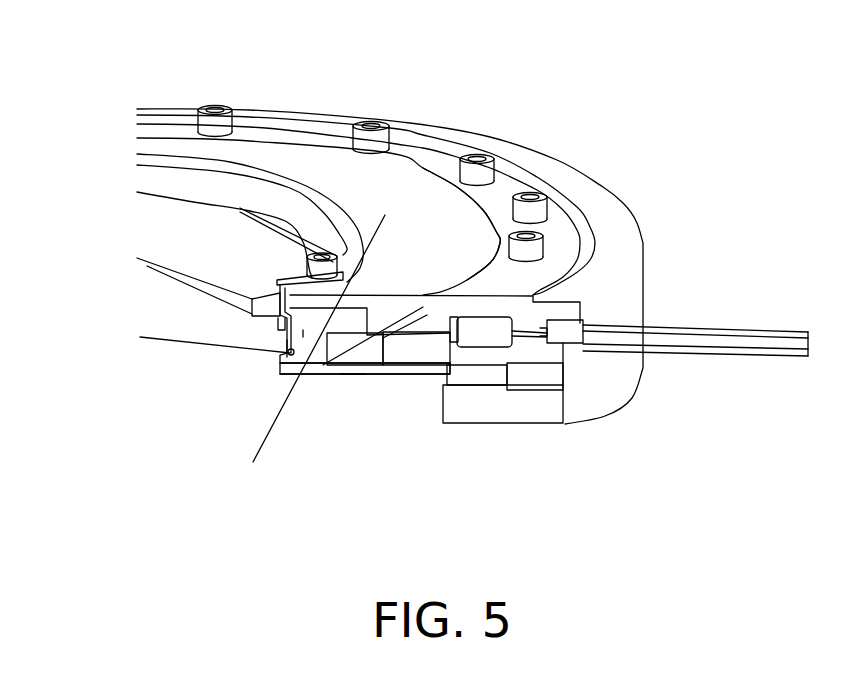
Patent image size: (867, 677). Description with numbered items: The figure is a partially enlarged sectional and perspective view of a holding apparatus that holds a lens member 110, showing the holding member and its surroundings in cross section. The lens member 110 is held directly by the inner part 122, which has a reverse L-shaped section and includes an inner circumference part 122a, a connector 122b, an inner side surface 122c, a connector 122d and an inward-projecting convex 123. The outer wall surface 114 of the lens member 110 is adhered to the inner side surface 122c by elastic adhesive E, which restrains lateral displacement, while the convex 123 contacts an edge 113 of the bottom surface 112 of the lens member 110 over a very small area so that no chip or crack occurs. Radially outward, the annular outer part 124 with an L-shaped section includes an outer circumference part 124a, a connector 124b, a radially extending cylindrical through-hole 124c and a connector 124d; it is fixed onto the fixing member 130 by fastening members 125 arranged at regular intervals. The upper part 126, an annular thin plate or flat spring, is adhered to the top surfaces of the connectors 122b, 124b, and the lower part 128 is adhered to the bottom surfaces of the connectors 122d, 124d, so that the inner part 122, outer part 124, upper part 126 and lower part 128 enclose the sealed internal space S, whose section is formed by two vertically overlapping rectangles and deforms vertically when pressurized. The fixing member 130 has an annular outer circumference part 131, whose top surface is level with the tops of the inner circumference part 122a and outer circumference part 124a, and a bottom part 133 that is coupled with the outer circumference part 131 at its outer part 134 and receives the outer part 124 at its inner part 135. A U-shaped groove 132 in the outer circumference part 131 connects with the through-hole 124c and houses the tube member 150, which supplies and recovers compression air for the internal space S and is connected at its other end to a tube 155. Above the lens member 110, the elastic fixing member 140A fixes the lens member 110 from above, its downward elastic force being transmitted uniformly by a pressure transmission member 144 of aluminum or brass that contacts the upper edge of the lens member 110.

The lens member 110 is at (160, 312).
The bottom surface 112 is at (173, 342).
The edge 113 is at (287, 357).
The outer wall surface 114 is at (283, 330).
The inner part 122 is at (342, 203).
The inner circumference part 122a is at (277, 323).
The connector 122b is at (312, 362).
The inner side surface 122c is at (319, 394).
The connector 122d is at (362, 262).
The convex 123 is at (291, 355).
The outer part 124 is at (422, 216).
The outer circumference part 124a is at (440, 395).
The connector 124b is at (392, 366).
The through-hole 124c is at (487, 338).
The connector 124d is at (431, 294).
The fastening member 125 is at (212, 106).
The upper part 126 is at (278, 487).
The lower part 128 is at (430, 260).
The fixing member 130 is at (607, 262).
The outer circumference part 131 is at (622, 294).
The groove 132 is at (565, 370).
The bottom part 133 is at (467, 403).
The outer part 134 is at (537, 395).
The inner part 135 is at (478, 395).
The elastic fixing member 140A is at (287, 290).
The pressure transmission member 144 is at (250, 308).
The tube member 150 is at (538, 334).
The tube 155 is at (773, 338).
The elastic adhesive E is at (303, 338).
The internal space S is at (353, 375).